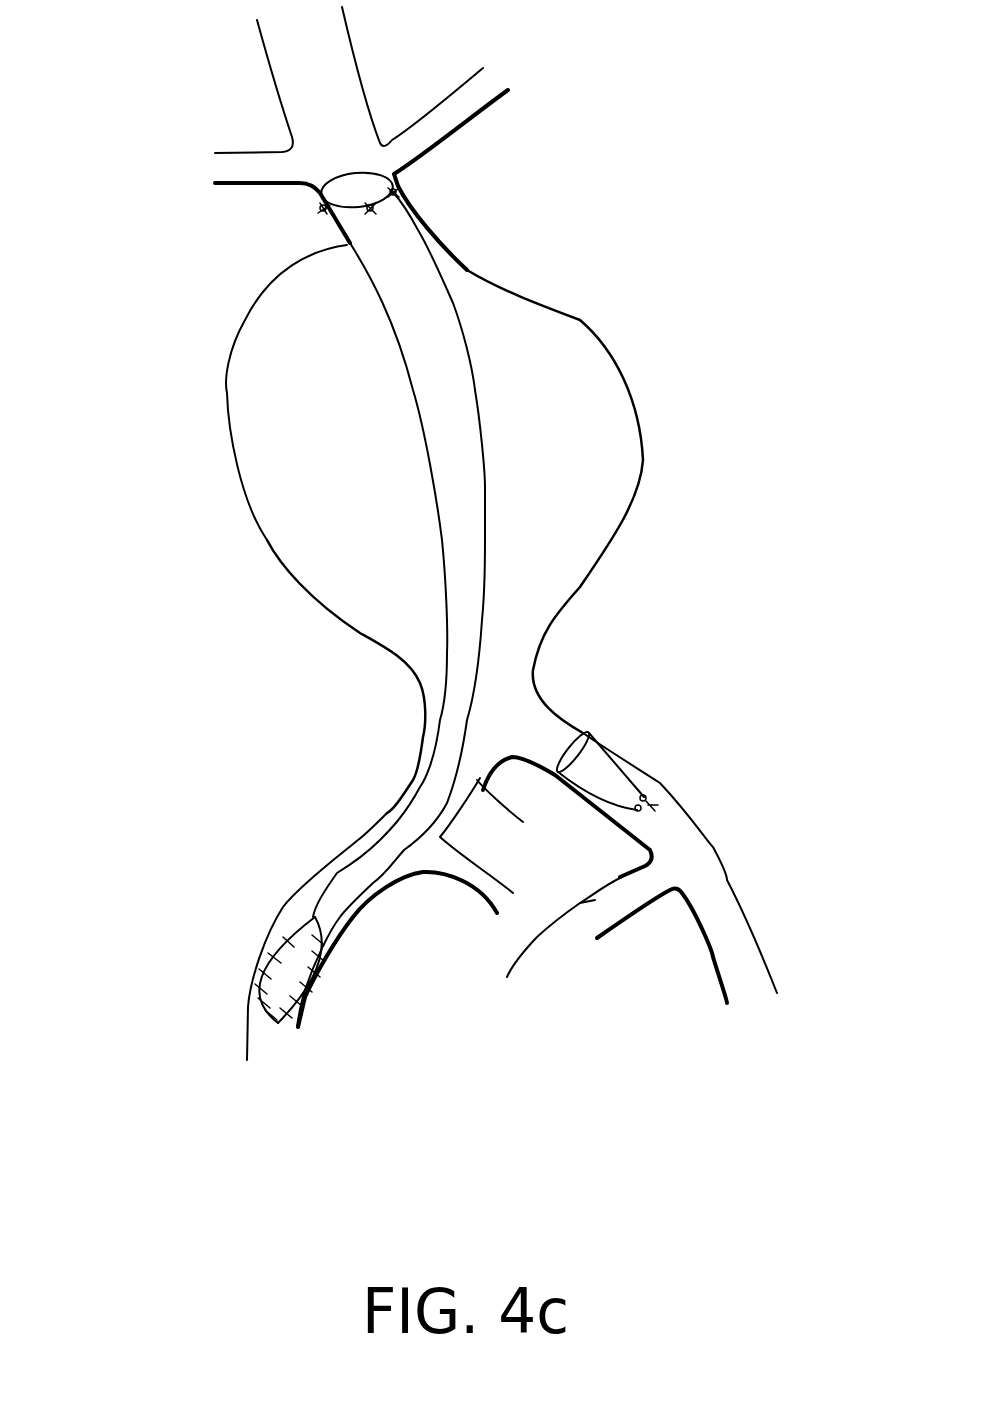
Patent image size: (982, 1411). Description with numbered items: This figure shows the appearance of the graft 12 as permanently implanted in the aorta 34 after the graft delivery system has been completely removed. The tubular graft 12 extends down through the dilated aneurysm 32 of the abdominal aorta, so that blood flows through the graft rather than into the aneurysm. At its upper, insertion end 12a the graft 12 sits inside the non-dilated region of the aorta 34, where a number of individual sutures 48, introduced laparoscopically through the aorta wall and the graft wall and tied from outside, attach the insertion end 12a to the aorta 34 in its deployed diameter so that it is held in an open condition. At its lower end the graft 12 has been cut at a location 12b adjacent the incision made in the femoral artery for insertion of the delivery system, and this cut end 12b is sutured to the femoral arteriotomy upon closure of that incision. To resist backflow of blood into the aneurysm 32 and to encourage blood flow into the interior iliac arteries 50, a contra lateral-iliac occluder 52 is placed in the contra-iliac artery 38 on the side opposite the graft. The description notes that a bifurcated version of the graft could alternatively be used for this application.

The graft 12 is at (460, 345).
The insertion end of the graft 12a is at (347, 225).
The cut end of the graft 12b is at (273, 940).
The aneurysm 32 is at (636, 392).
The aorta 34 is at (417, 217).
The contra-iliac artery 38 is at (593, 800).
The sutures 48 is at (323, 208).
The interior iliac arteries 50 is at (468, 875).
The contra lateral-iliac occluder 52 is at (593, 765).